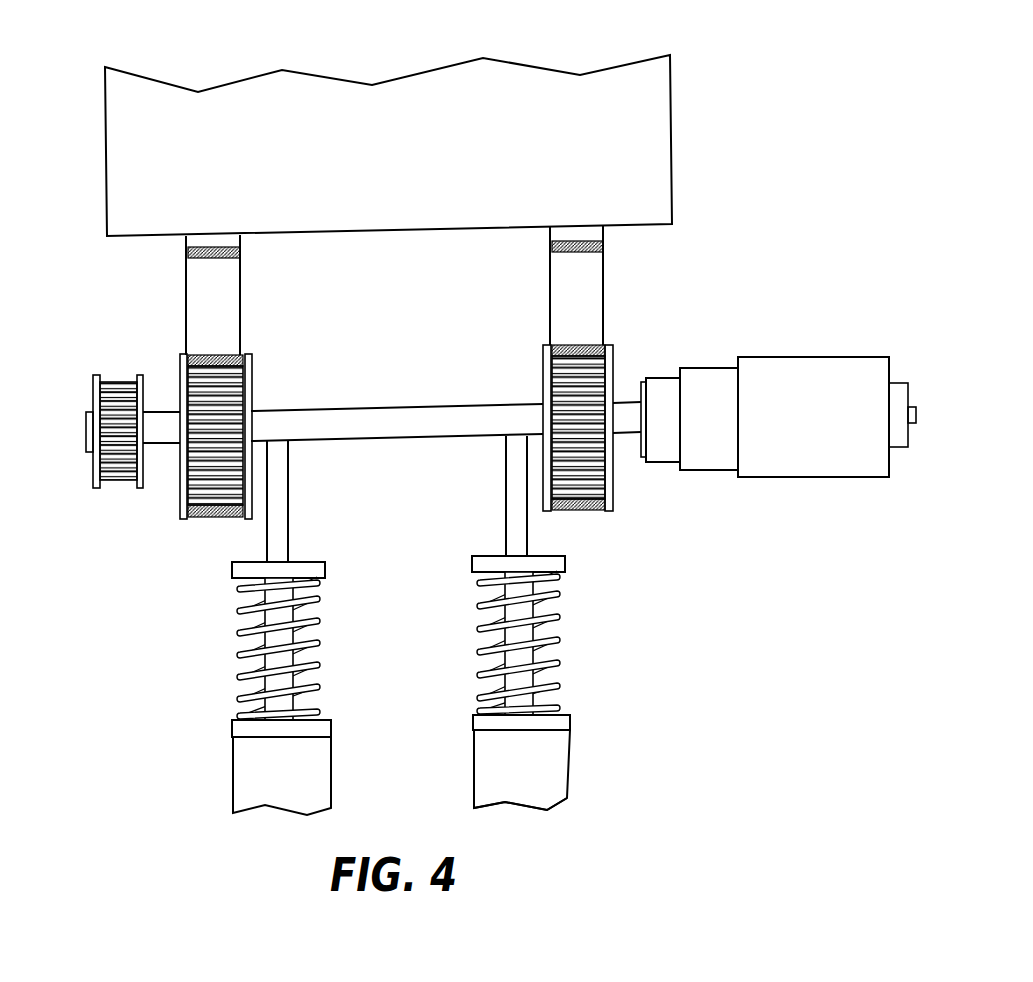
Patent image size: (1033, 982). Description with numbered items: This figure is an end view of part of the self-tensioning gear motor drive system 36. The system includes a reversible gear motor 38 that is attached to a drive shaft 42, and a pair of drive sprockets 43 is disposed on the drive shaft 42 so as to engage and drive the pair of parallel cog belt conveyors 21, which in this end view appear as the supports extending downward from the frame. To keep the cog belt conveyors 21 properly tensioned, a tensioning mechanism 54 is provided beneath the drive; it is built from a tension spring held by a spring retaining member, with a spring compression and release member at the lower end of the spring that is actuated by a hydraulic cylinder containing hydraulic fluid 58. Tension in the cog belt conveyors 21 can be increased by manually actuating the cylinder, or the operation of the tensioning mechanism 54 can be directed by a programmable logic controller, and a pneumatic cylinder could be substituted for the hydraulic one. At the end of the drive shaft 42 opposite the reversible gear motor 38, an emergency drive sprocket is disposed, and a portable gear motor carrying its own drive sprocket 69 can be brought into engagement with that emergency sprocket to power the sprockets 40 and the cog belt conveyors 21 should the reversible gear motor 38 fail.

The sprocket 40 is at (533, 65).
The cog belt conveyor 21 is at (186, 254).
The drive shaft 42 is at (402, 410).
The drive sprocket 43 is at (180, 493).
The drive sprocket 69 is at (93, 382).
The self-tensioning gear motor drive system 36 is at (637, 360).
The reversible gear motor 38 is at (838, 356).
The tensioning mechanism 54 is at (509, 636).
The hydraulic fluid 58 is at (542, 792).